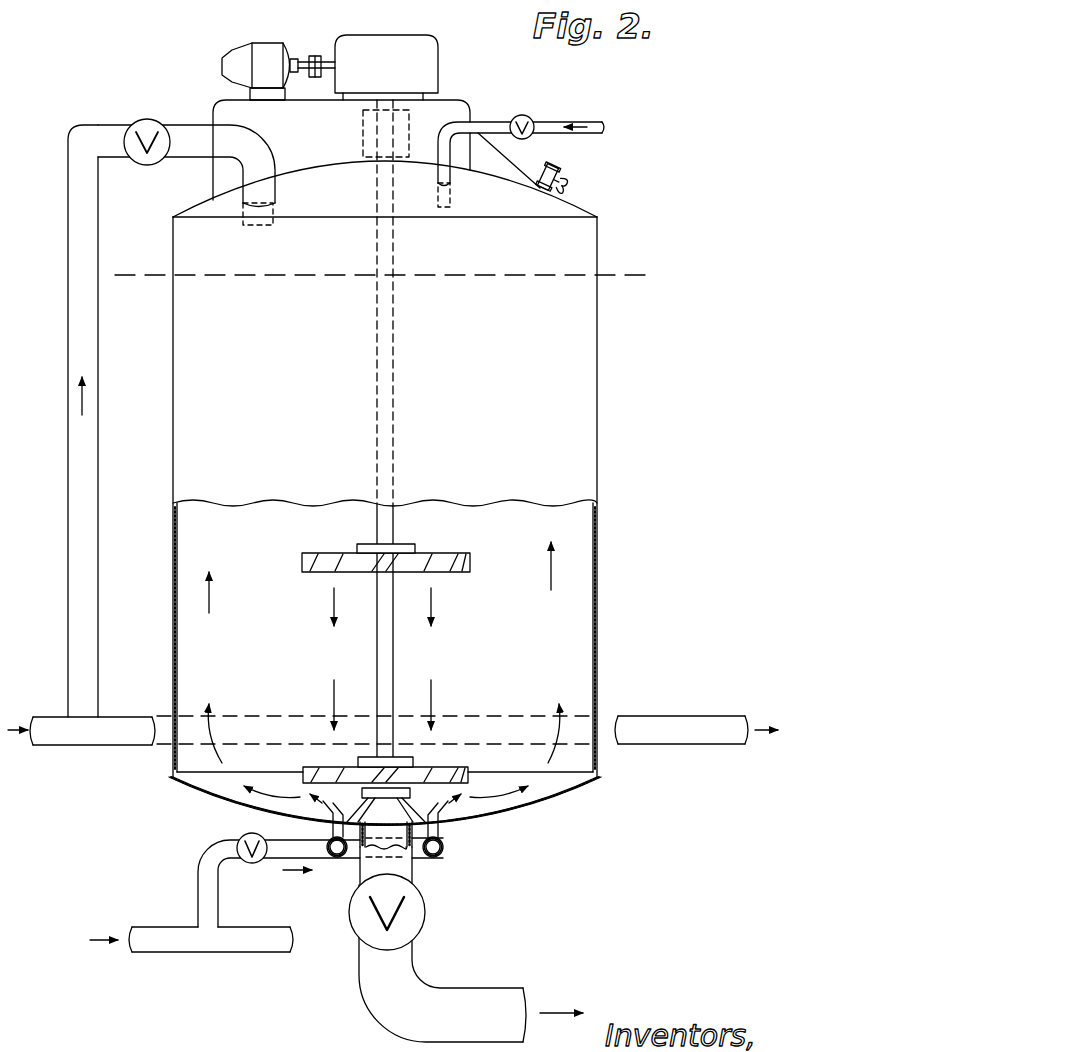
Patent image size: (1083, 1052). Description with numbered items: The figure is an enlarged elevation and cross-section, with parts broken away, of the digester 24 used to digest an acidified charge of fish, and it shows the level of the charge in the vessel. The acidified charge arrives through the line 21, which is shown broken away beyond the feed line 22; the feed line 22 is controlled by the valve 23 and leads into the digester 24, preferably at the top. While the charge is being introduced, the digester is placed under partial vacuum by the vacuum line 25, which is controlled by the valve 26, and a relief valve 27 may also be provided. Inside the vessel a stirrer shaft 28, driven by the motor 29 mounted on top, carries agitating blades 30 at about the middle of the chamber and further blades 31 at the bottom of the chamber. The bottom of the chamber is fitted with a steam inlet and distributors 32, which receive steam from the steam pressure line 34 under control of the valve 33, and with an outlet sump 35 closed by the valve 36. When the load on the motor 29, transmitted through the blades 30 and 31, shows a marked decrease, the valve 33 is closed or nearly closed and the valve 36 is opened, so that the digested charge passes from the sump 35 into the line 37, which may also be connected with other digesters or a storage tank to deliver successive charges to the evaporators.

The line 21 is at (50, 722).
The feed line 22 is at (68, 294).
The valve 23 is at (147, 119).
The digester 24 is at (600, 385).
The vacuum line 25 is at (487, 122).
The valve 26 is at (531, 116).
The relief valve 27 is at (562, 166).
The stirrer shaft 28 is at (388, 396).
The motor 29 is at (320, 34).
The agitating blades 30 is at (444, 554).
The blades 31 is at (443, 769).
The steam inlet and distributors 32 is at (326, 820).
The valve 33 is at (253, 863).
The steam pressure line 34 is at (188, 953).
The outlet sump 35 is at (398, 846).
The valve 36 is at (421, 916).
The line 37 is at (480, 990).